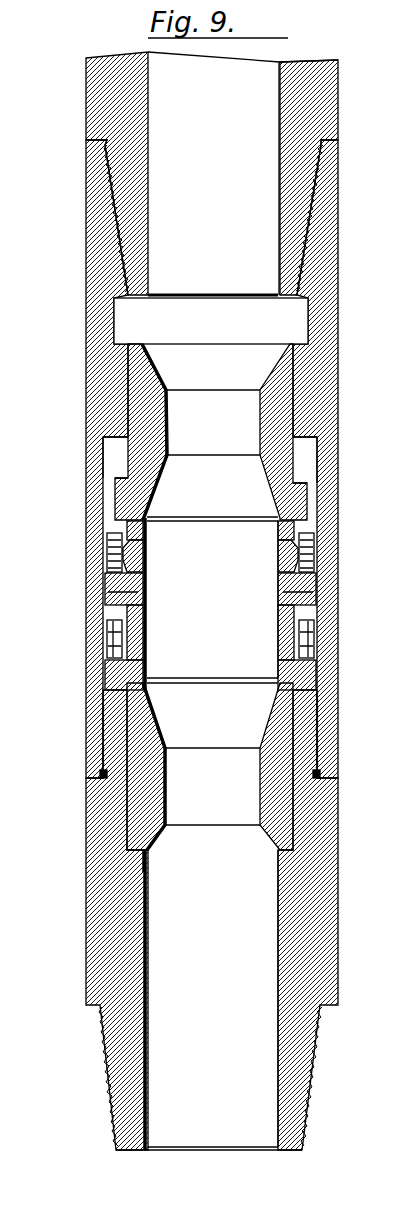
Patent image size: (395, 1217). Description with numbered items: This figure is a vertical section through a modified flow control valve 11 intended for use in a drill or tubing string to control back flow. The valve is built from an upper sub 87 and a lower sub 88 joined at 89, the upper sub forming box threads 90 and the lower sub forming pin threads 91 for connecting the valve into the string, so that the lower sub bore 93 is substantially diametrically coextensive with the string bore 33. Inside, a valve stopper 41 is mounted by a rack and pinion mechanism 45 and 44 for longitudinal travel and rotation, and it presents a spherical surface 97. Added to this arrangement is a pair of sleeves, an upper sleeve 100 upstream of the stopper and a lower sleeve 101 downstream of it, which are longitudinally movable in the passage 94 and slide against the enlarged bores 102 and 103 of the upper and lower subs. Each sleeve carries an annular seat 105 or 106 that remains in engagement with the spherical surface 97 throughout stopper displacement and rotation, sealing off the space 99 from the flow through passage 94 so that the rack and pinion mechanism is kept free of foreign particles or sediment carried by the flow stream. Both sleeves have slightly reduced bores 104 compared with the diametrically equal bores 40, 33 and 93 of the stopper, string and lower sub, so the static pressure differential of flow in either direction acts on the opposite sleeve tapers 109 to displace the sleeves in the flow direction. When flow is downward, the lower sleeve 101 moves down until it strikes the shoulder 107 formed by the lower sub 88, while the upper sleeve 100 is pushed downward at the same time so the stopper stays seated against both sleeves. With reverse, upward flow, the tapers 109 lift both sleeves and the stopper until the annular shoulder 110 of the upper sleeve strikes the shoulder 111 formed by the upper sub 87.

The well tool 11 is at (78, 96).
The string bore 33 is at (279, 193).
The upper sub 87 is at (90, 370).
The lower sub 88 is at (86, 925).
The joint 89 is at (103, 705).
The box threads 90 is at (115, 217).
The pin threads 91 is at (107, 1103).
The lower sub bore 93 is at (147, 955).
The passage 94 is at (234, 998).
The spherical surface 97 is at (292, 536).
The space 99 is at (105, 538).
The upper sleeve 100 is at (152, 403).
The lower sleeve 101 is at (150, 763).
The enlarged bore of upper sub 102 is at (130, 377).
The enlarged bore of lower sub 103 is at (152, 705).
The reduced sleeve bore 104 is at (168, 426).
The annular seat of upper sleeve 105 is at (148, 530).
The annular seat of lower sleeve 106 is at (148, 668).
The shoulder 107 is at (147, 858).
The sleeve tapers 109 is at (152, 352).
The annular shoulder 110 is at (118, 479).
The shoulder 111 is at (105, 440).
The stopper bore 40 is at (148, 627).
The valve stopper 41 is at (148, 557).
The pinion 44 is at (118, 597).
The rack 45 is at (108, 562).